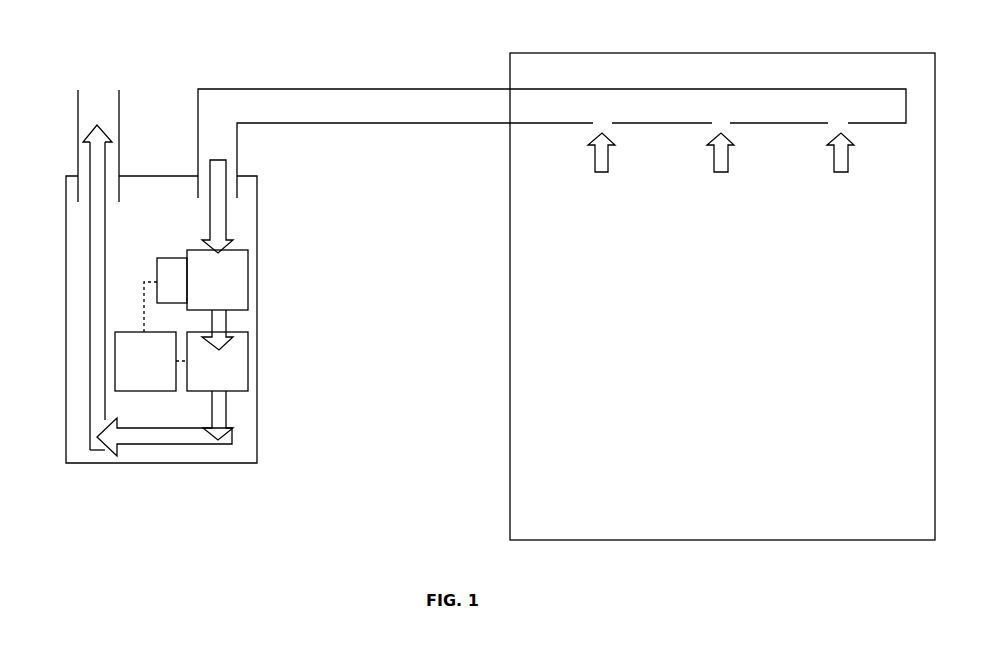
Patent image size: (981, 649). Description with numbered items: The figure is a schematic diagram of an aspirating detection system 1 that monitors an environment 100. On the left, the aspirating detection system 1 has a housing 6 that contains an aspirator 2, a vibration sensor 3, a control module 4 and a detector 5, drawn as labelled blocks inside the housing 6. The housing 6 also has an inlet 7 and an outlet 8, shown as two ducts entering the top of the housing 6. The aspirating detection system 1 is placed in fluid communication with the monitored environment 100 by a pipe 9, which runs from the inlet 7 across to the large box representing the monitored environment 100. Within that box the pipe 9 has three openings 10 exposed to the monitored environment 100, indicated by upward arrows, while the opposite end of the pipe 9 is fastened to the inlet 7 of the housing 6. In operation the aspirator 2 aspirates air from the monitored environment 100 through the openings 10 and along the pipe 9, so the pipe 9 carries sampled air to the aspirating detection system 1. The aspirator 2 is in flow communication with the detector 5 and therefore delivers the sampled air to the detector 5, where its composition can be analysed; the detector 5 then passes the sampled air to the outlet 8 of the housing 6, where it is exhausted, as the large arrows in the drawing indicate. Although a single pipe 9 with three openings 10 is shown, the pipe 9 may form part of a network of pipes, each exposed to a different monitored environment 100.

The aspirating detection system 1 is at (194, 276).
The aspirator 2 is at (212, 289).
The vibration sensor 3 is at (166, 289).
The control module 4 is at (140, 370).
The detector 5 is at (217, 375).
The housing 6 is at (258, 270).
The inlet 7 is at (240, 163).
The outlet 8 is at (77, 115).
The pipe 9 is at (352, 105).
The openings 10 is at (600, 112).
The monitored environment 100 is at (700, 209).